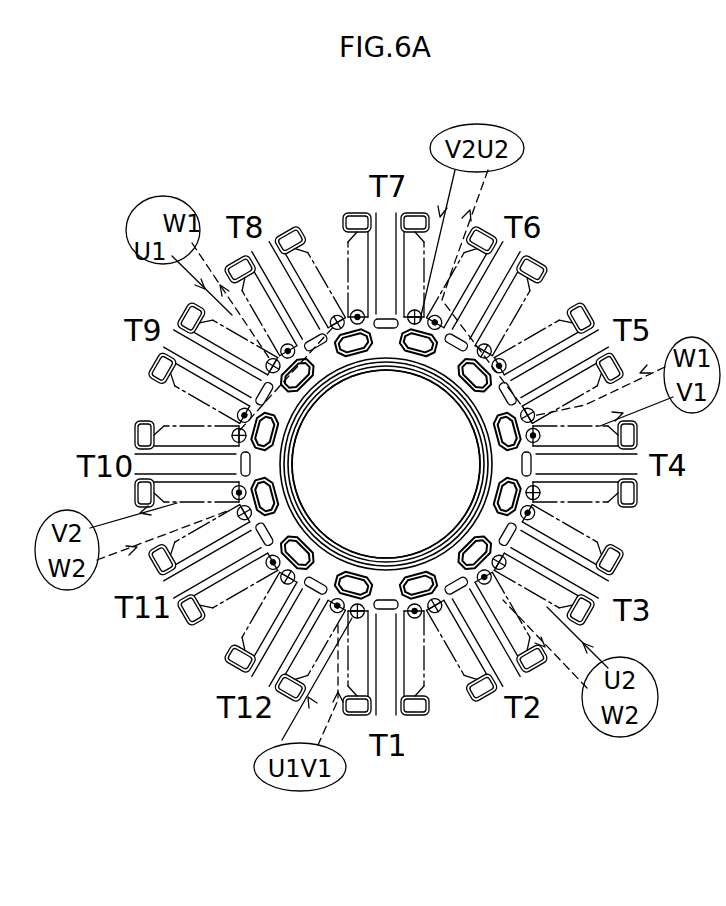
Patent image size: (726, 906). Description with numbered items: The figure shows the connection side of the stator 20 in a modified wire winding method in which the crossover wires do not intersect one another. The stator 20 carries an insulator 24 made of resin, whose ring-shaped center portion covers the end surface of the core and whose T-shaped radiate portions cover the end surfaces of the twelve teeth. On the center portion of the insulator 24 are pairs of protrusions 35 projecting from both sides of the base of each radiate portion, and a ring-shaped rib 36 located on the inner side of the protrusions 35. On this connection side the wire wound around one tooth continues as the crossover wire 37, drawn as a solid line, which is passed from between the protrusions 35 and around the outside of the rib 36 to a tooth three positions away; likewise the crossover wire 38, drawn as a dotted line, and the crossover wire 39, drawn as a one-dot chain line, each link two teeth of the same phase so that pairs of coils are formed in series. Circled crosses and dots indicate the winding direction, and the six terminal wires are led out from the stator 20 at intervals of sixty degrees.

The stator 20 is at (392, 455).
The insulator 24 is at (540, 263).
The protrusions 35 is at (457, 406).
The ring-shaped rib 36 is at (367, 368).
The crossover wire 37 is at (310, 408).
The crossover wire 38 is at (373, 577).
The crossover wire 39 is at (492, 443).